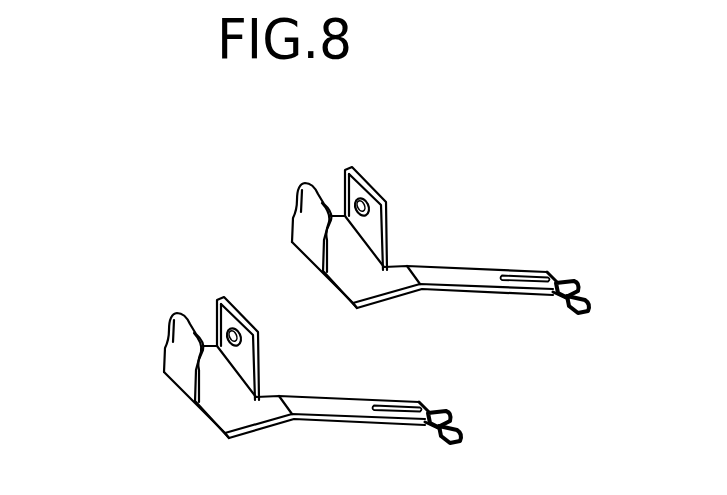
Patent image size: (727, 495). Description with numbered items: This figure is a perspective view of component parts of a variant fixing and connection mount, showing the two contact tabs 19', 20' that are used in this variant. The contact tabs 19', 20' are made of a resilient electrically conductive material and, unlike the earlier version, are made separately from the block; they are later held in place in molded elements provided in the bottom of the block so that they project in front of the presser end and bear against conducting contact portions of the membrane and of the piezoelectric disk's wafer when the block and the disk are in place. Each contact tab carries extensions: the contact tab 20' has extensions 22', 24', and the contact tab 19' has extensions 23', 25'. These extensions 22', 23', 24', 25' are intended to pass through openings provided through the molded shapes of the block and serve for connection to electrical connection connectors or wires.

The contact tab 19' is at (277, 370).
The contact tab 20' is at (405, 240).
The extension 22' is at (283, 227).
The extension 23' is at (155, 357).
The extension 24' is at (405, 218).
The extension 25' is at (279, 348).